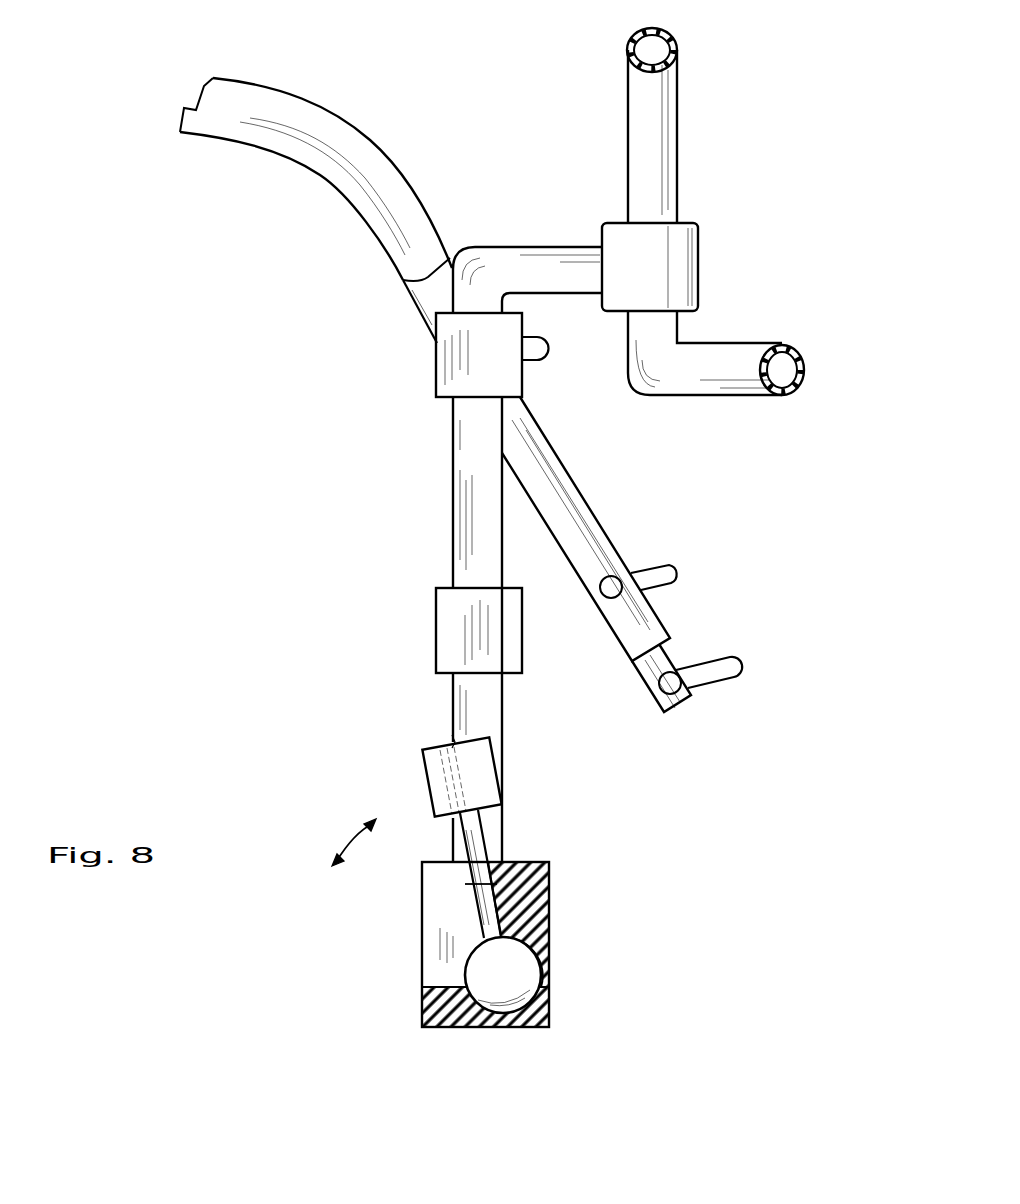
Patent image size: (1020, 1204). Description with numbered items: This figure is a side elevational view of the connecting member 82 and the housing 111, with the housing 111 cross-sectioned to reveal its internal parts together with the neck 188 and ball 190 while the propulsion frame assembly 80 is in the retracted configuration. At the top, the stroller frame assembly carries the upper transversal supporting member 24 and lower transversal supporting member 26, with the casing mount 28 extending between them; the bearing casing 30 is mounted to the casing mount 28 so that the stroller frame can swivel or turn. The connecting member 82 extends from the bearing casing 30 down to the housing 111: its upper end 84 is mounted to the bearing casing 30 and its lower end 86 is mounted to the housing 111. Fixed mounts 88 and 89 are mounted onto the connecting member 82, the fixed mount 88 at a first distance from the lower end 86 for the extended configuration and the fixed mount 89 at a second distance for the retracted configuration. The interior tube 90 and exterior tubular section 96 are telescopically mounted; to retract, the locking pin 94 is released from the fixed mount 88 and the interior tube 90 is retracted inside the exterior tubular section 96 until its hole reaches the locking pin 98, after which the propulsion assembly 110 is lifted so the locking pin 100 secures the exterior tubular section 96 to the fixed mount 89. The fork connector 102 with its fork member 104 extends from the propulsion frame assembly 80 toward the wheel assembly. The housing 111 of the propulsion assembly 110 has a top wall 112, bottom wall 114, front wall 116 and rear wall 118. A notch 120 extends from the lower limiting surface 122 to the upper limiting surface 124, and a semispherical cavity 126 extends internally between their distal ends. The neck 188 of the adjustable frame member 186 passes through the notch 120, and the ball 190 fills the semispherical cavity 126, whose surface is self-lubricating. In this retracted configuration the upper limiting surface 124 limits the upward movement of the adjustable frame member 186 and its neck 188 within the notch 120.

The upper transversal supporting member 24 is at (768, 350).
The lower transversal supporting member 26 is at (665, 30).
The casing mount 28 is at (627, 86).
The bearing casing 30 is at (682, 222).
The propulsion frame assembly 80 is at (268, 74).
The connecting member 82 is at (453, 428).
The upper end 84 is at (601, 225).
The lower end 86 is at (503, 862).
The fixed mount 88 is at (436, 617).
The fixed mount 89 is at (523, 383).
The interior tube 90 is at (643, 677).
The locking pin 94 is at (738, 653).
The exterior tubular section 96 is at (428, 327).
The locking pin 98 is at (670, 560).
The locking pin 100 is at (550, 348).
The fork connector 102 is at (452, 267).
The fork member 104 is at (360, 218).
The propulsion assembly 110 is at (556, 867).
The housing 111 is at (497, 885).
The top wall 112 is at (520, 862).
The bottom wall 114 is at (517, 1028).
The front wall 116 is at (549, 908).
The rear wall 118 is at (423, 1003).
The notch 120 is at (449, 886).
The lower limiting surface 122 is at (438, 987).
The upper limiting surface 124 is at (549, 880).
The semispherical cavity 126 is at (549, 957).
The adjustable frame member 186 is at (422, 750).
The neck 188 is at (462, 912).
The ball 190 is at (510, 975).